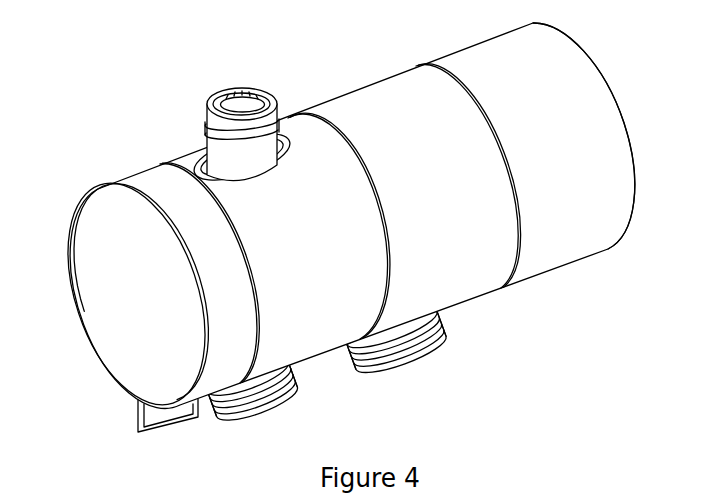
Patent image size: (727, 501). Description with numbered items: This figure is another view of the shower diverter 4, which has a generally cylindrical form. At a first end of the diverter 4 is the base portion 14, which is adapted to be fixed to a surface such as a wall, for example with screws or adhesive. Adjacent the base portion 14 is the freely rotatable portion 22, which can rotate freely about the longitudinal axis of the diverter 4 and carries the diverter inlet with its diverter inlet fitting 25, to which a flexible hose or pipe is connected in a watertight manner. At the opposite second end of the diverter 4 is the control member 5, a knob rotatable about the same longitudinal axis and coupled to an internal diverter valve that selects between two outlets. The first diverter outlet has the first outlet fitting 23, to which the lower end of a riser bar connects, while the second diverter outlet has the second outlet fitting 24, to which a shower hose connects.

The diverter 4 is at (562, 258).
The control member 5 is at (80, 250).
The base portion 14 is at (610, 162).
The freely rotatable portion 22 is at (372, 100).
The first outlet fitting 23 is at (213, 93).
The second outlet fitting 24 is at (263, 421).
The diverter inlet fitting 25 is at (413, 372).